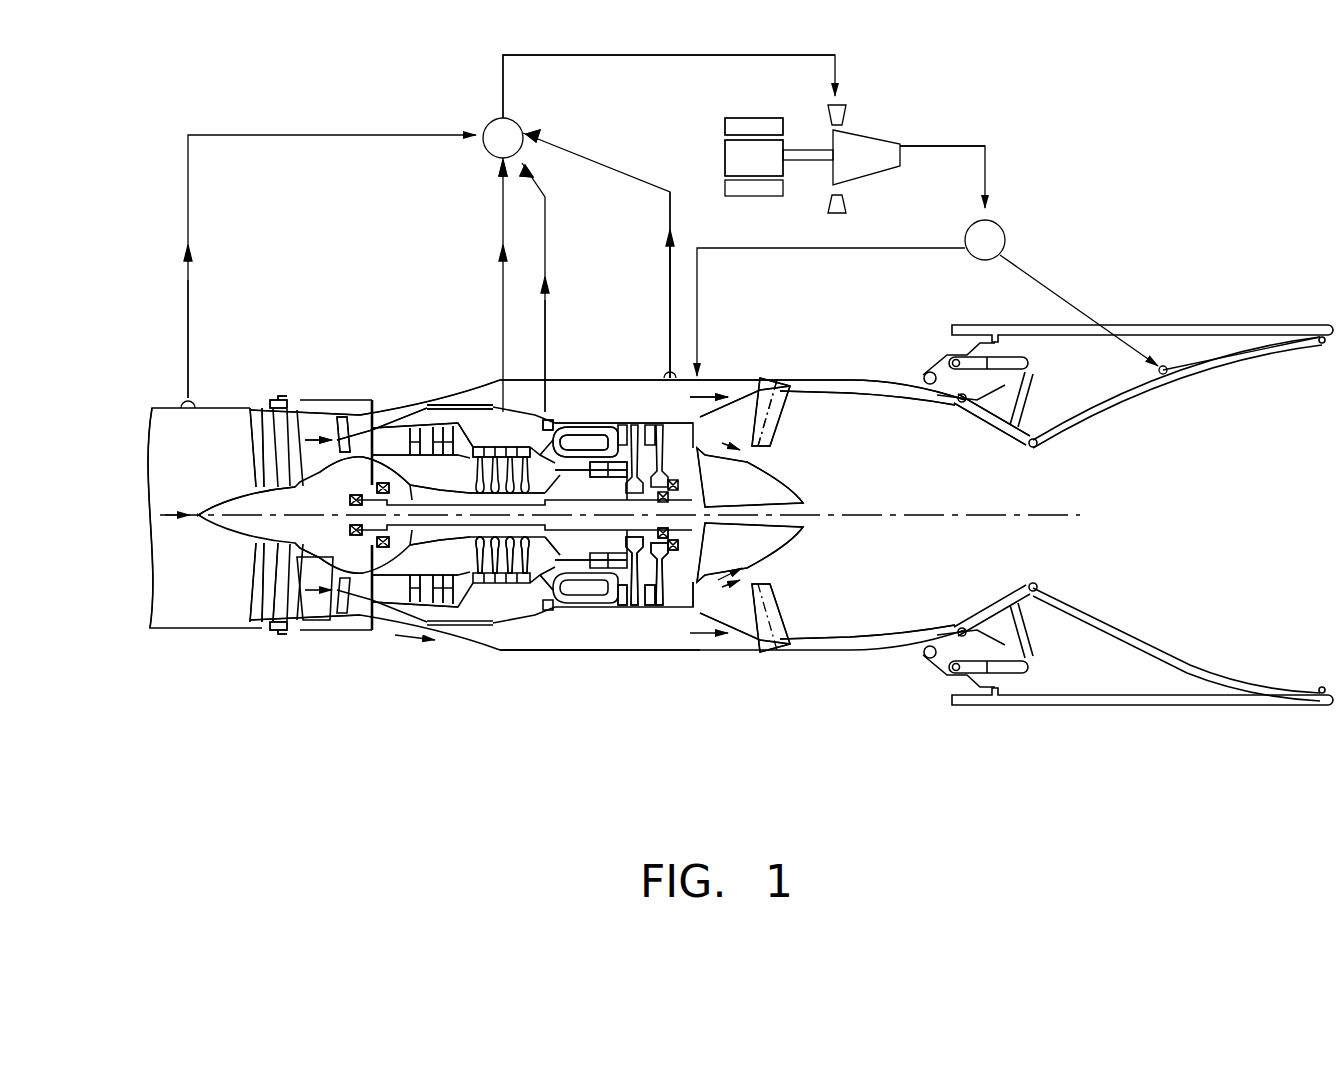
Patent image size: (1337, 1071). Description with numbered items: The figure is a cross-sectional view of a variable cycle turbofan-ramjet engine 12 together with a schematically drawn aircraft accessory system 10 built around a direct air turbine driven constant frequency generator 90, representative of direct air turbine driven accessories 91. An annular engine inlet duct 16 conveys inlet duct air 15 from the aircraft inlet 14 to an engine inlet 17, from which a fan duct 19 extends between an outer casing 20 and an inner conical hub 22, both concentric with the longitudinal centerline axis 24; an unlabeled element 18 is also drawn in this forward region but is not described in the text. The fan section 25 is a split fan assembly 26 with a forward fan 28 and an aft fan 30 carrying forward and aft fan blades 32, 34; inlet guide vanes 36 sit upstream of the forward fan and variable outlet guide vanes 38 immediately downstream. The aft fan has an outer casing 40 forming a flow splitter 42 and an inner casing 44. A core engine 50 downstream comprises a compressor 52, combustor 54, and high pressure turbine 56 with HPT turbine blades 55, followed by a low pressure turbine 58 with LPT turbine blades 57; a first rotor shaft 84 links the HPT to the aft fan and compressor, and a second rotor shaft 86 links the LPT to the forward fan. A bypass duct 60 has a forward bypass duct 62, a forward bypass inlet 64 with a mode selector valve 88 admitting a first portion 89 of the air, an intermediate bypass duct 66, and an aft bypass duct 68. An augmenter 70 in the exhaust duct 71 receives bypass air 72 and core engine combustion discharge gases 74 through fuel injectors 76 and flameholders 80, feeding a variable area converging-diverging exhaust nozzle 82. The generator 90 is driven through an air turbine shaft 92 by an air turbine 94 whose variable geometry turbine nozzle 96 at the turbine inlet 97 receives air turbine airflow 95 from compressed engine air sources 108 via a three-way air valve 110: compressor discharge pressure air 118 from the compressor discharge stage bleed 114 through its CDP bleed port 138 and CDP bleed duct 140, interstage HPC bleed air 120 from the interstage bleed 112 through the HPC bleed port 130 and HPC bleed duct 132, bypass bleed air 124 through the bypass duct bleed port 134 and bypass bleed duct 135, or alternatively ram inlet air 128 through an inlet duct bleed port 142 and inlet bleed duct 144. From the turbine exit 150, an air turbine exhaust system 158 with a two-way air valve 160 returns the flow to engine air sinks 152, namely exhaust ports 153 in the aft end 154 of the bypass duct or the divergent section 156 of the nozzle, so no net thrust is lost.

The aircraft accessory system 10 is at (962, 60).
The variable cycle turbofan-ramjet engine 12 is at (420, 690).
The aircraft inlet 14 is at (137, 400).
The inlet duct air 15 is at (160, 512).
The engine inlet duct 16 is at (200, 632).
The engine inlet 17 is at (248, 402).
The fan frame strut 18 is at (318, 405).
The fan duct 19 is at (283, 628).
The outer casing 20 is at (315, 620).
The inner conical hub 22 is at (240, 540).
The longitudinal centerline axis 24 is at (885, 505).
The fan section 25 is at (323, 400).
The split fan assembly 26 is at (440, 632).
The forward fan 28 is at (318, 455).
The aft fan 30 is at (408, 420).
The forward fan blades 32 is at (318, 555).
The aft fan blades 34 is at (420, 562).
The inlet guide vanes 36 is at (255, 425).
The variable outlet guide vanes 38 is at (280, 400).
The outer casing 40 is at (412, 395).
The flow splitter 42 is at (360, 612).
The inner casing 44 is at (435, 425).
The core engine 50 is at (605, 338).
The compressor 52 is at (500, 600).
The combustor 54 is at (603, 620).
The HPT turbine blades 55 is at (690, 556).
The high pressure turbine 56 is at (618, 605).
The LPT turbine blades 57 is at (760, 580).
The low pressure turbine 58 is at (682, 618).
The bypass duct 60 is at (528, 385).
The forward bypass duct 62 is at (393, 396).
The forward bypass inlet 64 is at (368, 625).
The intermediate bypass duct 66 is at (512, 360).
The aft bypass duct 68 is at (612, 388).
The augmenter 70 is at (790, 418).
The exhaust duct 71 is at (818, 398).
The bypass air 72 is at (705, 393).
The core engine combustion discharge gases 74 is at (708, 470).
The fuel injectors 76 is at (820, 392).
The flameholders 80 is at (780, 438).
The variable area converging-diverging exhaust nozzle 82 is at (1062, 388).
The first rotor shaft 84 is at (570, 608).
The second rotor shaft 86 is at (375, 480).
The mode selector valve 88 is at (370, 398).
The first portion 89 is at (383, 620).
The constant frequency generator 90 is at (748, 108).
The direct air turbine driven accessories 91 is at (710, 140).
The air turbine shaft 92 is at (808, 168).
The air turbine 94 is at (868, 132).
The air turbine airflow 95 is at (690, 55).
The variable geometry turbine nozzle 96 is at (846, 112).
The turbine inlet 97 is at (845, 205).
The compressed engine air sources 108 is at (500, 160).
The three-way air valve 110 is at (520, 125).
The interstage bleed 112 is at (520, 425).
The compressor discharge stage bleed 114 is at (548, 465).
The compressor discharge pressure air 118 is at (548, 300).
The interstage HPC bleed air 120 is at (500, 280).
The bypass bleed air 124 is at (668, 255).
The ram inlet air 128 is at (190, 280).
The HPC bleed port 130 is at (468, 468).
The HPC bleed duct 132 is at (498, 395).
The bypass duct bleed port 134 is at (610, 375).
The bypass bleed duct 135 is at (620, 172).
The CDP bleed port 138 is at (570, 430).
The CDP bleed duct 140 is at (548, 230).
The inlet duct bleed port 142 is at (195, 398).
The inlet bleed duct 144 is at (190, 210).
The turbine exit 150 is at (902, 148).
The engine air sinks 152 is at (683, 408).
The exhaust ports 153 is at (1165, 378).
The aft end 154 is at (690, 652).
The divergent section 156 is at (1218, 372).
The air turbine exhaust system 158 is at (962, 258).
The two-way air valve 160 is at (1003, 232).